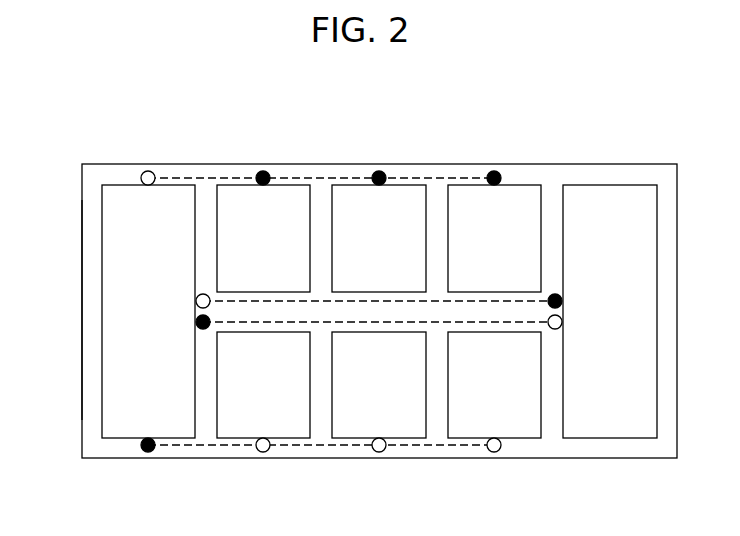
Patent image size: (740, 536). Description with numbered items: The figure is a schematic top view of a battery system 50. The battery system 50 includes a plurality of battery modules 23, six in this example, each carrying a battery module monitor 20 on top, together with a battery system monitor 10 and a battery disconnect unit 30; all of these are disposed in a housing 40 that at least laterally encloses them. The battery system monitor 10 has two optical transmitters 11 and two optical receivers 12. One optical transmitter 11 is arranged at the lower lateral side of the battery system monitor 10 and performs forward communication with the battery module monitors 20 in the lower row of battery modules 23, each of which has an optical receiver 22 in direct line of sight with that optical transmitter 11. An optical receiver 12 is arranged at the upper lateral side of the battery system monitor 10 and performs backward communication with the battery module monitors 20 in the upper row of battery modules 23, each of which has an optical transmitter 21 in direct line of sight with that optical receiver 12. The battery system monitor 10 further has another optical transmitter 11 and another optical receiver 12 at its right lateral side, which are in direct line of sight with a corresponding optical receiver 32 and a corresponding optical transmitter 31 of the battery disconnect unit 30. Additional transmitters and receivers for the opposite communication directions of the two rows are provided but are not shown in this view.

The battery system monitor 10 is at (135, 325).
The optical transmitter 11 is at (148, 452).
The optical receiver 12 is at (148, 171).
The battery module monitor 20 is at (379, 311).
The battery module 23 is at (238, 254).
The optical transmitter 21 is at (263, 171).
The optical receiver 22 is at (263, 452).
The battery disconnect unit 30 is at (597, 327).
The optical transmitter 31 is at (555, 294).
The optical receiver 32 is at (555, 329).
The housing 40 is at (82, 308).
The battery system 50 is at (643, 157).